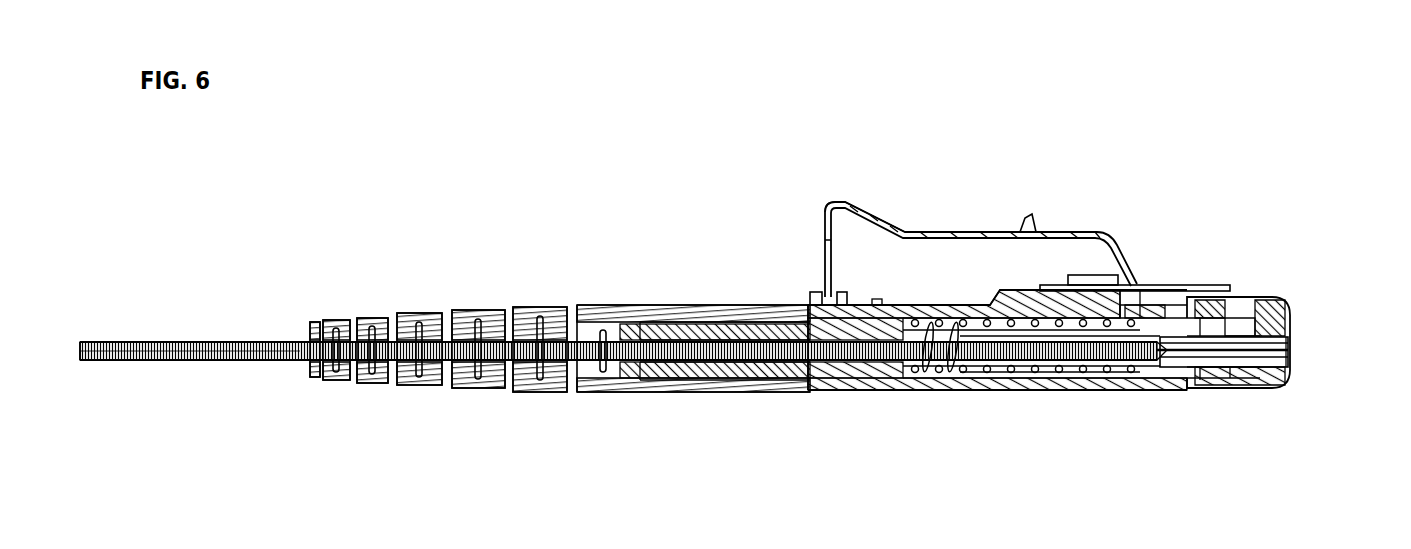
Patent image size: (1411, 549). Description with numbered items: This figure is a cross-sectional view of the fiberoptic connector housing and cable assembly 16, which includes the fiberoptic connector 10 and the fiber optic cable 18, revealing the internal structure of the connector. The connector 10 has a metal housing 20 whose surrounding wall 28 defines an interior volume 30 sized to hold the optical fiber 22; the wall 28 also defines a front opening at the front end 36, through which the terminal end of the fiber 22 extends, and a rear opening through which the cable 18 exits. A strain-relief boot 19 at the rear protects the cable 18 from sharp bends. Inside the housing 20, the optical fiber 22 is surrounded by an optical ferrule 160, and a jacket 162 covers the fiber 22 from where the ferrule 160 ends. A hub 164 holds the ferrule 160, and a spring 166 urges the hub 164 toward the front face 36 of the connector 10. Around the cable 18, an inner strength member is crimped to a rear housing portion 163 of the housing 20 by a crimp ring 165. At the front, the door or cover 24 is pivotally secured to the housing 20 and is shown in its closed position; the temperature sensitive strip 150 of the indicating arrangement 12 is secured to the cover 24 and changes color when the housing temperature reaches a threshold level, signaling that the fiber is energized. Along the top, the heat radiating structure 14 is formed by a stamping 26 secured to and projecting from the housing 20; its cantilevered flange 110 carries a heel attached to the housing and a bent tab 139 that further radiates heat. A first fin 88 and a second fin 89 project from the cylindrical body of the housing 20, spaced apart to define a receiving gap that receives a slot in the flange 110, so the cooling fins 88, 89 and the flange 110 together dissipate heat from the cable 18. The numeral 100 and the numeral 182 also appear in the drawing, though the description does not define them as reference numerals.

The fiberoptic connector 10 is at (1104, 164).
The indicating arrangement 12 is at (1302, 344).
The heat radiating structure 14 is at (767, 222).
The fiberoptic connector housing and cable assembly 16 is at (754, 133).
The fiber optic cable 18 is at (185, 342).
The strain-relief boot 19 is at (577, 392).
The housing 20 is at (1068, 391).
The optical fiber 22 is at (1226, 350).
The cover 24 is at (1288, 318).
The stamping 26 is at (945, 232).
The surrounding wall 28 is at (1002, 391).
The interior volume 30 is at (937, 372).
The front end 36 is at (1293, 330).
The first fin 88 is at (839, 292).
The second fin 89 is at (812, 292).
The housing nose 100 is at (1286, 377).
The flange 110 is at (879, 218).
The tab 139 is at (1023, 216).
The temperature sensitive strip 150 is at (1290, 352).
The optical ferrule 160 is at (1252, 333).
The jacket 162 is at (1133, 352).
The rear housing portion 163 is at (771, 372).
The hub 164 is at (1150, 316).
The crimp ring 165 is at (705, 375).
The spring 166 is at (958, 325).
The cable jacket 182 is at (204, 360).